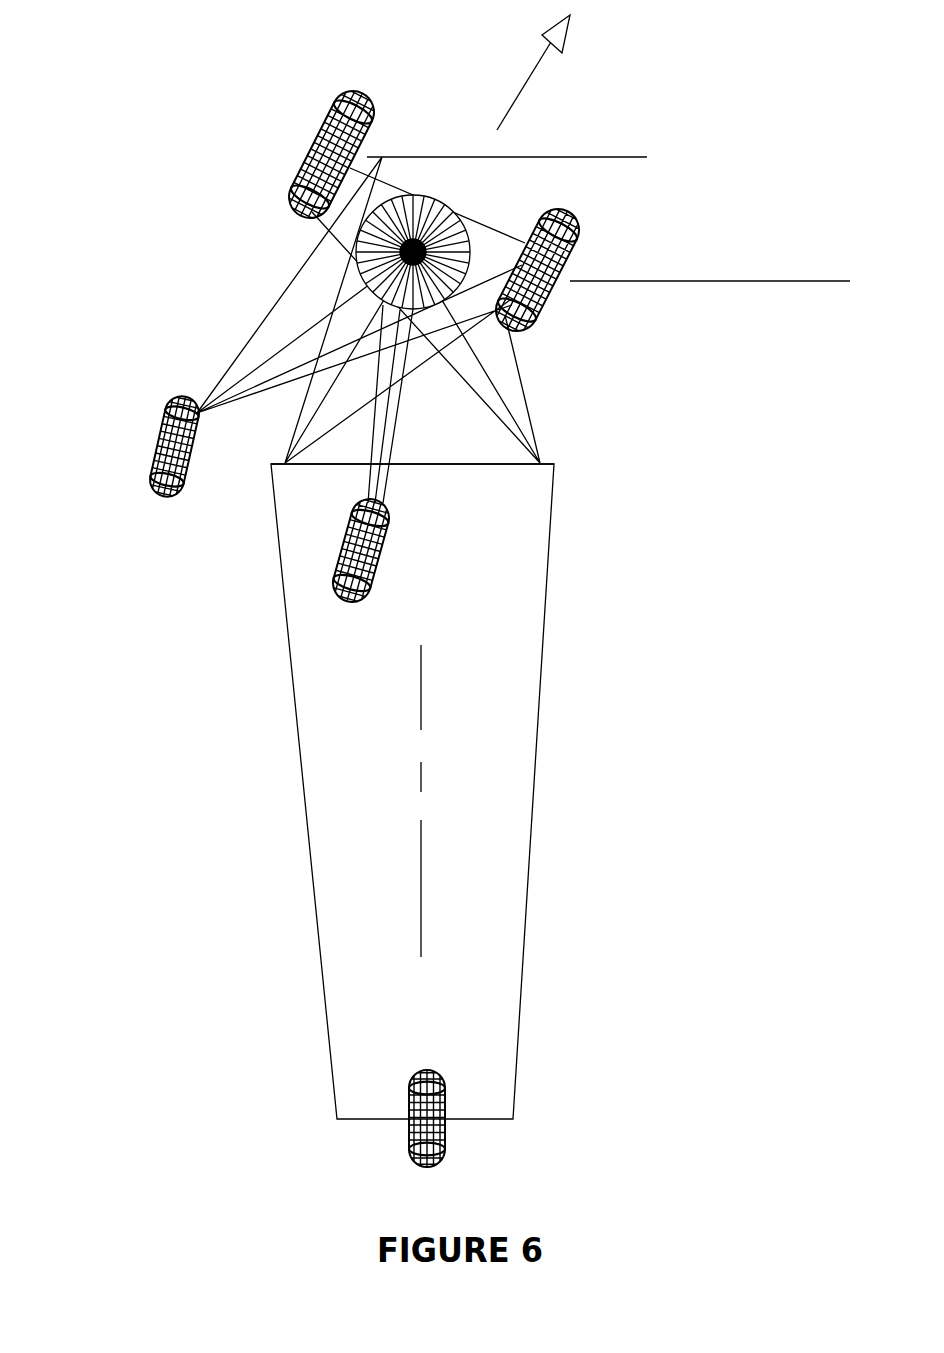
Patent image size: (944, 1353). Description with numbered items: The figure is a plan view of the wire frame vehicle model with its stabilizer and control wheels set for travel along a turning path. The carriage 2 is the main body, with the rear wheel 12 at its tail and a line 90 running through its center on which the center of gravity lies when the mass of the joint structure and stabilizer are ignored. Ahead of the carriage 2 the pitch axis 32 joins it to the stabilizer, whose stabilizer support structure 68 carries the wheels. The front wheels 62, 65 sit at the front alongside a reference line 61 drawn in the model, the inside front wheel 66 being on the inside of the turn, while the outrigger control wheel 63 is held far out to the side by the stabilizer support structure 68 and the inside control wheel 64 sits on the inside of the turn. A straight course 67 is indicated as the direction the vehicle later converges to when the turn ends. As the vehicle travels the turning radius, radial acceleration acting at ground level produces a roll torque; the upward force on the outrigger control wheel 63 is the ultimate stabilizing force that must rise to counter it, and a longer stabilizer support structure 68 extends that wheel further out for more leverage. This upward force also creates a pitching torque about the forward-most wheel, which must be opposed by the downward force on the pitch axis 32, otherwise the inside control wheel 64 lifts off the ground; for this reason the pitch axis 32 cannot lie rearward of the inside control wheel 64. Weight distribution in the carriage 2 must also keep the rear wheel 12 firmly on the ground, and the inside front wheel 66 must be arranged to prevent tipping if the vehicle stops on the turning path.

The carriage 2 is at (549, 657).
The rear wheel 12 is at (408, 1153).
The pitch axis 32 is at (580, 468).
The reference plane 61 is at (660, 157).
The front wheel 62 is at (287, 197).
The outrigger control wheel 63 is at (170, 500).
The inside control wheel 64 is at (355, 600).
The front wheel 65 is at (858, 285).
The inside front wheel 66 is at (540, 322).
The straight course 67 is at (545, 72).
The stabilizer support structure 68 is at (295, 308).
The line through the center of the carriage 90 is at (425, 783).